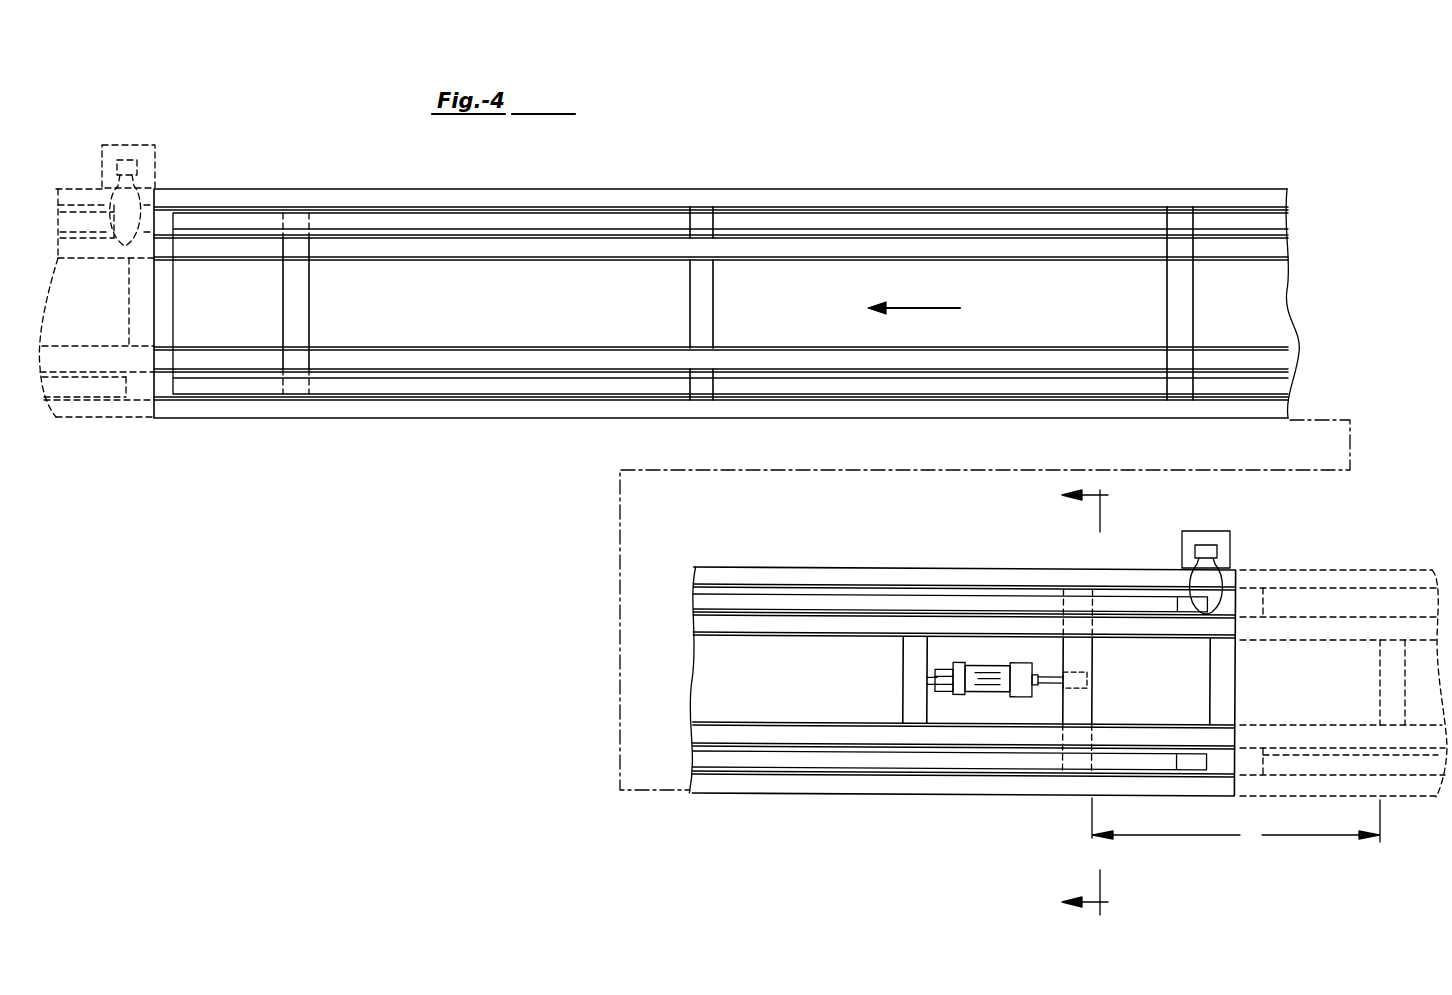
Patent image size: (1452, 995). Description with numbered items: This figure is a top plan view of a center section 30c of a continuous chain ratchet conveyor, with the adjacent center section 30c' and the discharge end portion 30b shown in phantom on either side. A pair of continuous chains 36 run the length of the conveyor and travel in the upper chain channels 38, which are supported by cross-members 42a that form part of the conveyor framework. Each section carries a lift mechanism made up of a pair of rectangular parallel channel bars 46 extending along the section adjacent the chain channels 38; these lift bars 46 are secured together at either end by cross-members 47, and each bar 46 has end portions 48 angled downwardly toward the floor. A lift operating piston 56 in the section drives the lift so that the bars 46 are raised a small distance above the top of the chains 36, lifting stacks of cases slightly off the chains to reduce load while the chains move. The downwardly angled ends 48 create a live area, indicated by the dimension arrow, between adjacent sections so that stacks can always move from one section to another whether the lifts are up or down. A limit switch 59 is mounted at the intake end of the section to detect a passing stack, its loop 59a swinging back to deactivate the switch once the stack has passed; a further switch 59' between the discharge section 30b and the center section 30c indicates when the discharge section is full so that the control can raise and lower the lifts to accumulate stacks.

The discharge end portion 30b is at (103, 126).
The center section 30c is at (752, 433).
The adjacent section 30c' is at (1068, 685).
The continuous chains 36 is at (445, 251).
The upper chain channels 38 is at (512, 262).
The cross-members 42a is at (172, 315).
The channel bars 46 is at (640, 212).
The cross-members 47 is at (303, 312).
The end portions 48 is at (215, 222).
The lift operating piston 56 is at (1000, 697).
The limit switch 59 is at (1177, 549).
The loop 59a is at (1215, 564).
The switch 59' is at (170, 172).